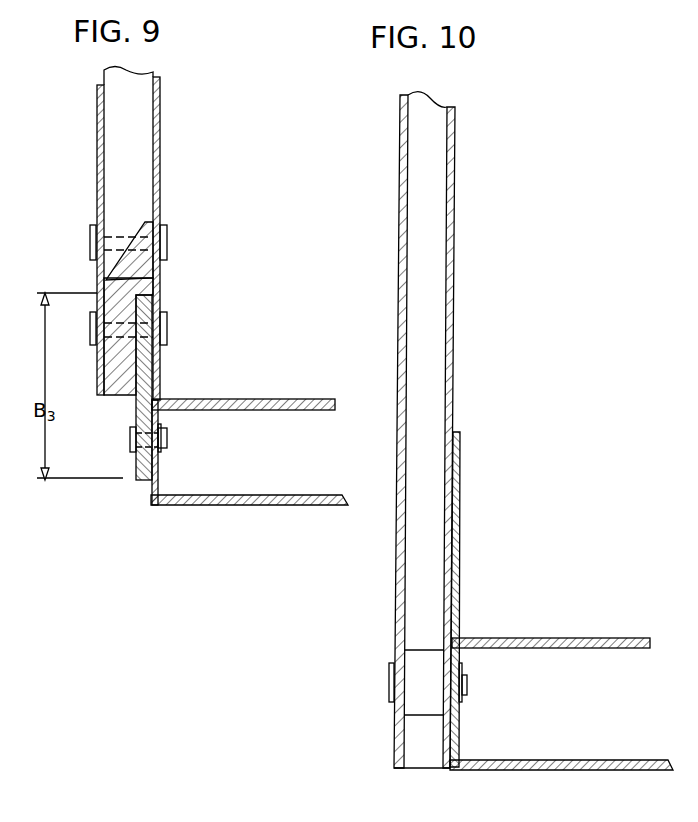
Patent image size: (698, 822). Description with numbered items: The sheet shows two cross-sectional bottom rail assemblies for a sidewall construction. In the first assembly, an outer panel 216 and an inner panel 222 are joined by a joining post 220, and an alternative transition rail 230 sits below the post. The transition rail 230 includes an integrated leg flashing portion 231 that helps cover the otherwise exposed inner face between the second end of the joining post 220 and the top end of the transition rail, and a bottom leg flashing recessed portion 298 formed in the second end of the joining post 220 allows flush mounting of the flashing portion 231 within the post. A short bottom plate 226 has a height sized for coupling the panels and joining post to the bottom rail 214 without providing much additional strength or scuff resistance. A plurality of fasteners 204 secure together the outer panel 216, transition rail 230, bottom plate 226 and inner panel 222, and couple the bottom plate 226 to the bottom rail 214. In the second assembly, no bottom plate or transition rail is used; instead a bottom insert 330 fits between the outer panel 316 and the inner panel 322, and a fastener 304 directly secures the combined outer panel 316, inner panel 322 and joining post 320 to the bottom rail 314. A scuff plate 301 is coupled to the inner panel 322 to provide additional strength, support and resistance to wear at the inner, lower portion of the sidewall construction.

In FIG. 9, the fasteners 204 is at (90, 225).
In FIG. 9, the bottom rail 214 is at (223, 516).
In FIG. 9, the outer panel 216 is at (97, 110).
In FIG. 9, the joining post 220 is at (140, 78).
In FIG. 9, the inner panel 222 is at (160, 95).
In FIG. 9, the bottom plate 226 is at (142, 480).
In FIG. 9, the transition rail 230 is at (112, 390).
In FIG. 9, the leg flashing portion 231 is at (161, 225).
In FIG. 9, the bottom leg flashing recessed portion 298 is at (143, 218).
In FIG. 10, the scuff plate 301 is at (460, 475).
In FIG. 10, the fastener 304 is at (390, 682).
In FIG. 10, the bottom rail 314 is at (557, 628).
In FIG. 10, the outer panel 316 is at (395, 600).
In FIG. 10, the joining post 320 is at (425, 153).
In FIG. 10, the inner panel 322 is at (453, 287).
In FIG. 10, the bottom insert 330 is at (420, 705).